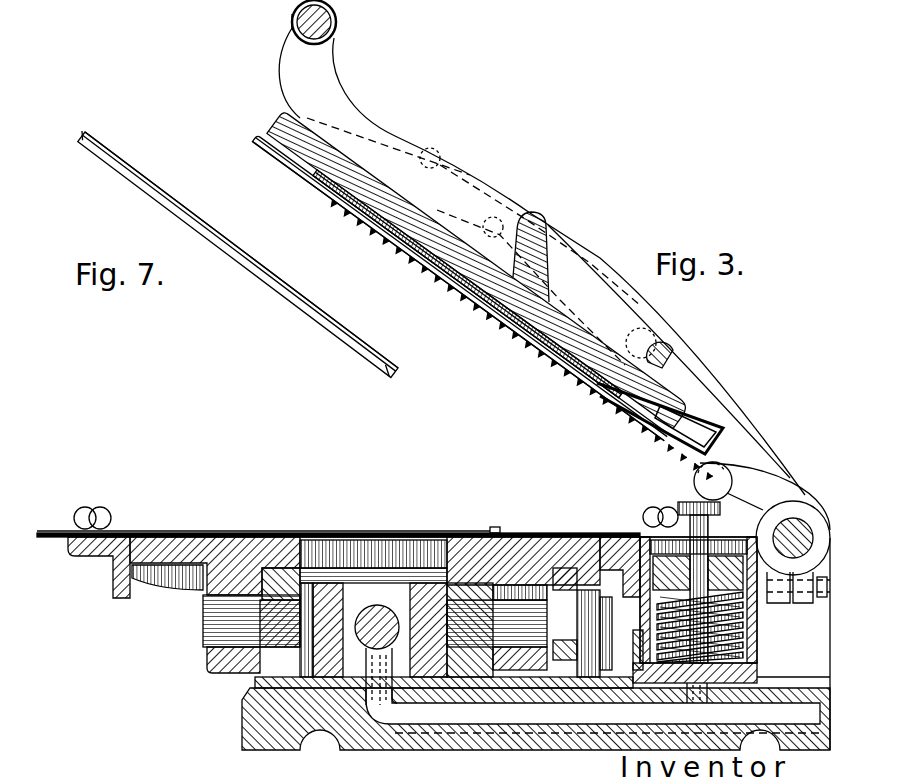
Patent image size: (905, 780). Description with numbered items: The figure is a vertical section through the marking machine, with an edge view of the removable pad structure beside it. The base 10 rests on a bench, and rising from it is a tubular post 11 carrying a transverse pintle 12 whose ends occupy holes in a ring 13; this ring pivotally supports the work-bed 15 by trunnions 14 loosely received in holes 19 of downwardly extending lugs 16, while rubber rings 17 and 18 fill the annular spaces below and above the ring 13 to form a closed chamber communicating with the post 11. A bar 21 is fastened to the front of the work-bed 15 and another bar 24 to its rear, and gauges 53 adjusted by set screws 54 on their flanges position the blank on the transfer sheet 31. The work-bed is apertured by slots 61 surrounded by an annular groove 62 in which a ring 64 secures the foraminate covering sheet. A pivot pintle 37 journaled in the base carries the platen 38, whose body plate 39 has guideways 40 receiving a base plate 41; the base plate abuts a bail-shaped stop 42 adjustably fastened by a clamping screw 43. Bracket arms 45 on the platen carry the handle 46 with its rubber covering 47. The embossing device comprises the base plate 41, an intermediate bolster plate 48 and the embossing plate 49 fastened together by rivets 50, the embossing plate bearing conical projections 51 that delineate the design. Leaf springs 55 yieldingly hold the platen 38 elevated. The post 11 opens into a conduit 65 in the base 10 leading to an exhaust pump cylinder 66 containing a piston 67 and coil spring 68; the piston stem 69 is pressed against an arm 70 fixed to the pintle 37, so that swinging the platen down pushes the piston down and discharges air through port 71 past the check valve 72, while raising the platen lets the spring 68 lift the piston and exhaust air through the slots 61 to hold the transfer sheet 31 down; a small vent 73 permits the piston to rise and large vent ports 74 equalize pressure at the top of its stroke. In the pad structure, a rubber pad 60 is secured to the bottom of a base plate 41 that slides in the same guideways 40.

In FIG. 3, the base 10 is at (244, 726).
In FIG. 3, the tubular post 11 is at (250, 670).
In FIG. 3, the pintle 12 is at (373, 637).
In FIG. 3, the ring 13 is at (265, 596).
In FIG. 3, the trunnions 14 is at (216, 623).
In FIG. 3, the work-bed 15 is at (186, 550).
In FIG. 3, the lugs 16 is at (240, 652).
In FIG. 3, the ring of resilient material 17 is at (268, 678).
In FIG. 3, the ring of resilient material 18 is at (260, 586).
In FIG. 3, the holes 19 is at (196, 584).
In FIG. 3, the bar 21 is at (128, 600).
In FIG. 3, the bar 24 is at (643, 540).
In FIG. 3, the transfer sheet 31 is at (470, 531).
In FIG. 3, the pivot pintle 37 is at (795, 522).
In FIG. 3, the platen 38 is at (704, 362).
In FIG. 3, the body plate 39 is at (534, 292).
In FIG. 3, the guideways 40 is at (276, 148).
In FIG. 7, the base plate 41 is at (97, 136).
In FIG. 3, the base plate 41 is at (312, 178).
In FIG. 3, the stop 42 is at (648, 412).
In FIG. 3, the clamping screw 43 is at (667, 350).
In FIG. 3, the bracket arms 45 is at (336, 88).
In FIG. 3, the handle 46 is at (292, 14).
In FIG. 3, the covering 47 is at (333, 22).
In FIG. 3, the bolster plate 48 is at (334, 197).
In FIG. 3, the embossing plate 49 is at (360, 220).
In FIG. 3, the eyelets or rivets 50 is at (346, 213).
In FIG. 3, the conical projections 51 is at (490, 308).
In FIG. 3, the gauges 53 is at (135, 532).
In FIG. 3, the set screws 54 is at (78, 510).
In FIG. 3, the leaf springs 55 is at (757, 637).
In FIG. 7, the pad 60 is at (253, 278).
In FIG. 3, the slots 61 is at (380, 540).
In FIG. 3, the annular groove 62 is at (281, 540).
In FIG. 3, the ring 64 is at (453, 540).
In FIG. 3, the conduit 65 is at (523, 724).
In FIG. 3, the exhaust pump cylinder 66 is at (641, 610).
In FIG. 3, the piston 67 is at (643, 535).
In FIG. 3, the coil spring 68 is at (604, 535).
In FIG. 3, the stem 69 is at (684, 502).
In FIG. 3, the arm 70 is at (765, 496).
In FIG. 3, the port 71 is at (600, 704).
In FIG. 3, the check valve 72 is at (643, 630).
In FIG. 3, the vent 73 is at (760, 680).
In FIG. 3, the vent ports 74 is at (760, 617).